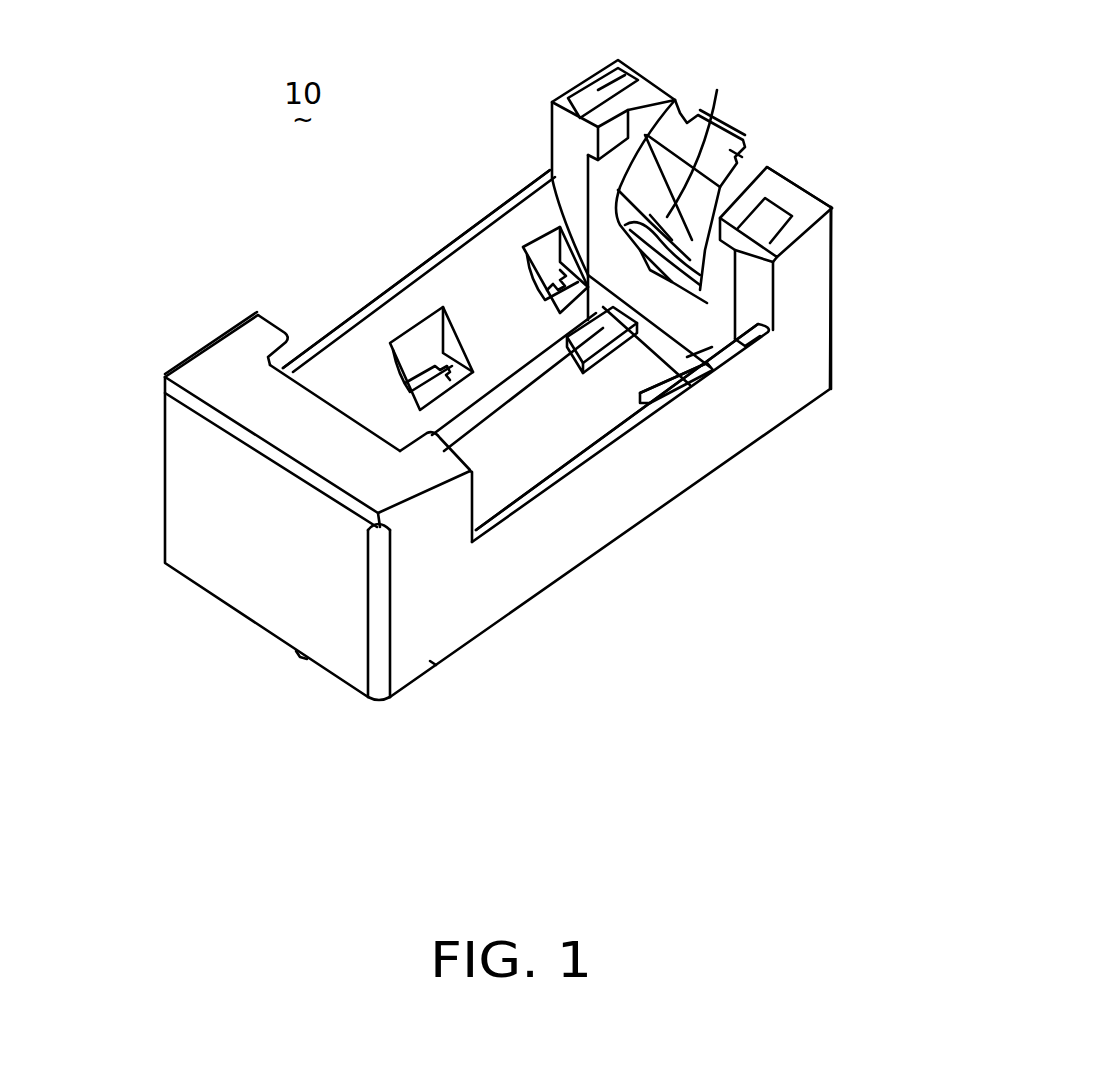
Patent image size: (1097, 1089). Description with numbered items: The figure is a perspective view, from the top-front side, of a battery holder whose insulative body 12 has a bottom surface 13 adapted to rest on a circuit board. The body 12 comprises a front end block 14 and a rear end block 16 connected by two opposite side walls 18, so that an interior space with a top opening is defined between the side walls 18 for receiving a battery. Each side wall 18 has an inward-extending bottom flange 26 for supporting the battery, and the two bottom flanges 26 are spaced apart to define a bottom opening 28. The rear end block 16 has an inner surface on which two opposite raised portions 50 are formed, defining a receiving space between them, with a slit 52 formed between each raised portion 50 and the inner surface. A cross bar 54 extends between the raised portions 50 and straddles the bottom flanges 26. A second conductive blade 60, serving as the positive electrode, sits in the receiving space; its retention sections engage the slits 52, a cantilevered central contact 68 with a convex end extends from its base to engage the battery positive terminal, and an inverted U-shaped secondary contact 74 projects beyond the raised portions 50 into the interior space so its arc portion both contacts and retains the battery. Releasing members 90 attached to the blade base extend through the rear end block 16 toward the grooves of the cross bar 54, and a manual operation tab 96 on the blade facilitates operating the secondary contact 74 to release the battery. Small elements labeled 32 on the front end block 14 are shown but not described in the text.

The body 12 is at (722, 460).
The bottom surface 13 is at (808, 408).
The front end block 14 is at (280, 407).
The rear end block 16 is at (820, 197).
The side wall 18 is at (490, 222).
The bottom flange 26 is at (500, 347).
The bottom opening 28 is at (493, 477).
The protrusion 32 is at (268, 332).
The raised portion 50 is at (575, 165).
The slit 52 is at (633, 100).
The cross bar 54 is at (700, 340).
The second conductive blade 60 is at (722, 185).
The central contact 68 is at (747, 343).
The secondary contact 74 is at (658, 222).
The releasing member 90 is at (607, 350).
The manual operation tab 96 is at (738, 140).